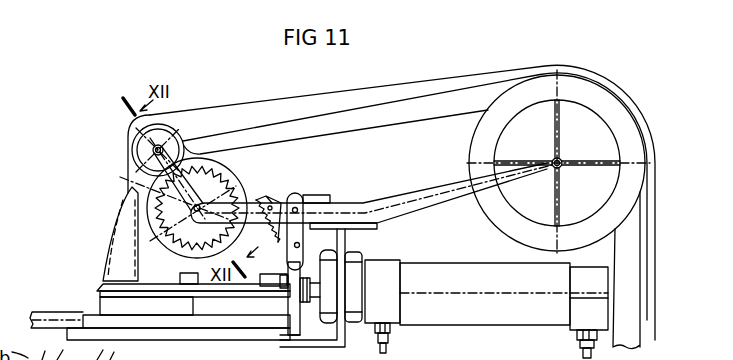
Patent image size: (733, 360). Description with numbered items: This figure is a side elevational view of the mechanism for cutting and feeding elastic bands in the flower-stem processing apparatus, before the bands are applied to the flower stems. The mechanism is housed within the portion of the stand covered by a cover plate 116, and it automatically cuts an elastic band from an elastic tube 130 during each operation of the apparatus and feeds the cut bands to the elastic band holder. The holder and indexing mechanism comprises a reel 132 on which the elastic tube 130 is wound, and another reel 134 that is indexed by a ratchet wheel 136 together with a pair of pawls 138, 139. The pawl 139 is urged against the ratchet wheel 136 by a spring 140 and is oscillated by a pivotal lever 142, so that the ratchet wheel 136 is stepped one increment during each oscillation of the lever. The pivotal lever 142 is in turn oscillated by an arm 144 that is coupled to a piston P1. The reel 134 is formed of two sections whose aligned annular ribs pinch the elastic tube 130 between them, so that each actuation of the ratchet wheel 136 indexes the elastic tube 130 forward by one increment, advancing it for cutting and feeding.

The cover plate 116 is at (207, 114).
The elastic tube 130 is at (358, 124).
The reel 132 is at (484, 121).
The reel 134 is at (223, 162).
The ratchet wheel 136 is at (125, 178).
The pawl 138 is at (263, 195).
The pawl 139 is at (230, 347).
The spring 140 is at (317, 237).
The pivotal lever 142 is at (305, 231).
The arm 144 is at (300, 313).
The piston P1 is at (477, 316).